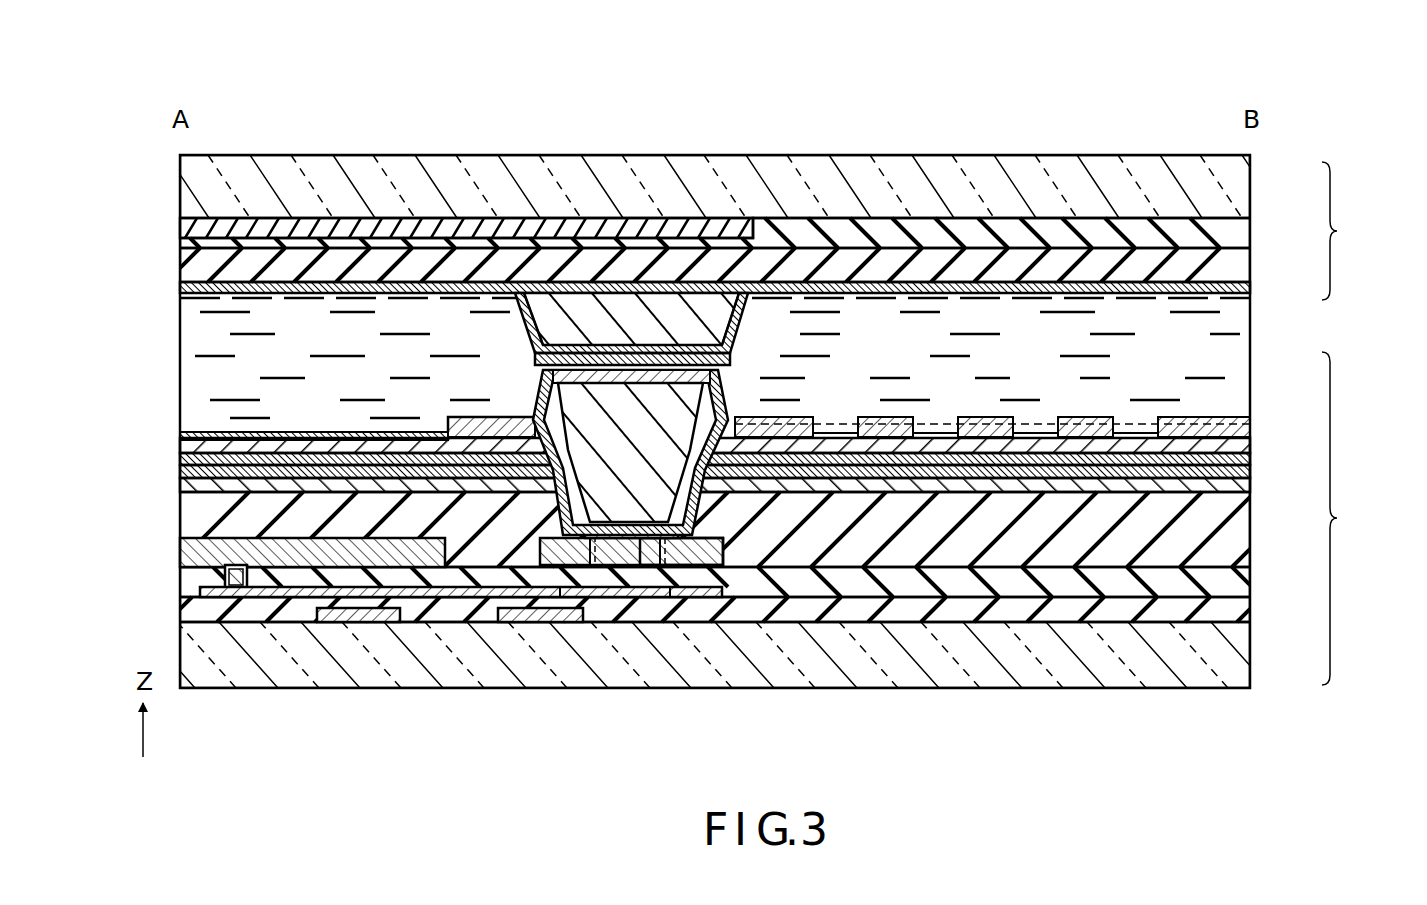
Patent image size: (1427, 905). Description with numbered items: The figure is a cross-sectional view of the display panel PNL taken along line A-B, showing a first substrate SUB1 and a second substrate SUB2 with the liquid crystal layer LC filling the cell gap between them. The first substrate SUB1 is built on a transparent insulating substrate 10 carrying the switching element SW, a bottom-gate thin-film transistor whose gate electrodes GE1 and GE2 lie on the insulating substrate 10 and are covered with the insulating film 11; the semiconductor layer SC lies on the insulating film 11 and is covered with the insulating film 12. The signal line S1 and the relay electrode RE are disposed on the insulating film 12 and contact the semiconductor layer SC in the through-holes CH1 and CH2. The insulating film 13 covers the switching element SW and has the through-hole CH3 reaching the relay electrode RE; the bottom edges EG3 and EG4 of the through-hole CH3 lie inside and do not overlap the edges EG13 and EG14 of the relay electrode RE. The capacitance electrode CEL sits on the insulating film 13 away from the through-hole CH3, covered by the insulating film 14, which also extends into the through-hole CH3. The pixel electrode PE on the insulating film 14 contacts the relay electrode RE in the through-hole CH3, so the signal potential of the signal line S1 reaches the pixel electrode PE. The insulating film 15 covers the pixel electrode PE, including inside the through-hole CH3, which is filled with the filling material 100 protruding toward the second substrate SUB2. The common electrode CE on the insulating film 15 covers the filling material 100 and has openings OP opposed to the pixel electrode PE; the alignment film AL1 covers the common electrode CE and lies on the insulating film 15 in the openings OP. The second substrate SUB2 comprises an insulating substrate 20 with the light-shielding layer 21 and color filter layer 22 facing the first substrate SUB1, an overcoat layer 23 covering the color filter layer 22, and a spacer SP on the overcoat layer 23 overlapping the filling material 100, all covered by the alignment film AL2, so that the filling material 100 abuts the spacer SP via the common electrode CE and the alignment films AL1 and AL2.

The display panel PNL is at (1153, 117).
The insulating substrate 20 is at (1236, 178).
The light-shielding layer 21 is at (727, 220).
The color filter layer 22 is at (1236, 238).
The overcoat layer 23 is at (1236, 265).
The alignment film AL2 is at (1236, 288).
The liquid crystal layer LC is at (1236, 335).
The spacer SP is at (722, 315).
The filling material 100 is at (565, 408).
The through-hole CH3 is at (640, 486).
The opening OP is at (1136, 426).
The alignment film AL1 is at (1212, 419).
The common electrode CE is at (1222, 426).
The insulating film 15 is at (1232, 437).
The pixel electrode PE is at (1228, 458).
The insulating film 14 is at (1232, 474).
The capacitance electrode CEL is at (1228, 487).
The insulating film 13 is at (1236, 540).
The insulating film 12 is at (1236, 584).
The insulating film 11 is at (1236, 612).
The insulating substrate 10 is at (1236, 670).
The edge of relay electrode EG13 is at (540, 556).
The edge of relay electrode EG14 is at (725, 556).
The edge of through-hole EG3 is at (548, 566).
The edge of through-hole EG4 is at (685, 562).
The relay electrode RE is at (598, 568).
The through-hole CH2 is at (642, 540).
The through-hole CH1 is at (208, 548).
The signal line S1 is at (283, 568).
The gate electrode GE1 is at (356, 623).
The gate electrode GE2 is at (512, 623).
The switching element SW is at (450, 636).
The semiconductor layer SC is at (625, 598).
The first substrate SUB1 is at (1361, 518).
The second substrate SUB2 is at (1361, 231).